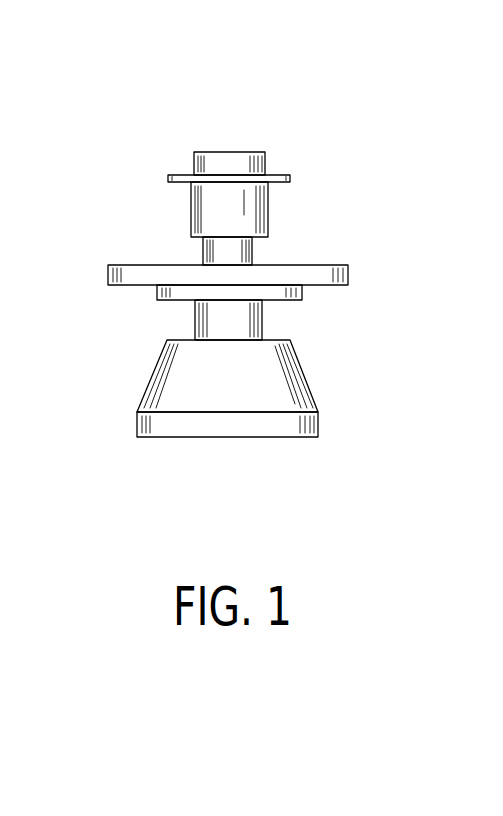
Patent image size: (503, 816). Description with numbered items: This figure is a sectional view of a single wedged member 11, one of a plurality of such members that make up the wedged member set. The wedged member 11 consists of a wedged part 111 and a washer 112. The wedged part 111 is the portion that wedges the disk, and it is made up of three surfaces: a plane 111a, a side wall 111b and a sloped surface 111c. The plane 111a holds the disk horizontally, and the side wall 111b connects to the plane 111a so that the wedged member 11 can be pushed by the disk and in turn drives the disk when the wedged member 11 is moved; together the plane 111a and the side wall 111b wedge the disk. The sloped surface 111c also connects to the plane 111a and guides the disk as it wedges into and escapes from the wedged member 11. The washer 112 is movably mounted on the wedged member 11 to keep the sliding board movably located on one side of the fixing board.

The wedged member 11 is at (294, 237).
The wedged part 111 is at (309, 361).
The plane 111a is at (272, 342).
The side wall 111b is at (257, 318).
The sloped surface 111c is at (312, 392).
The washer 112 is at (283, 175).